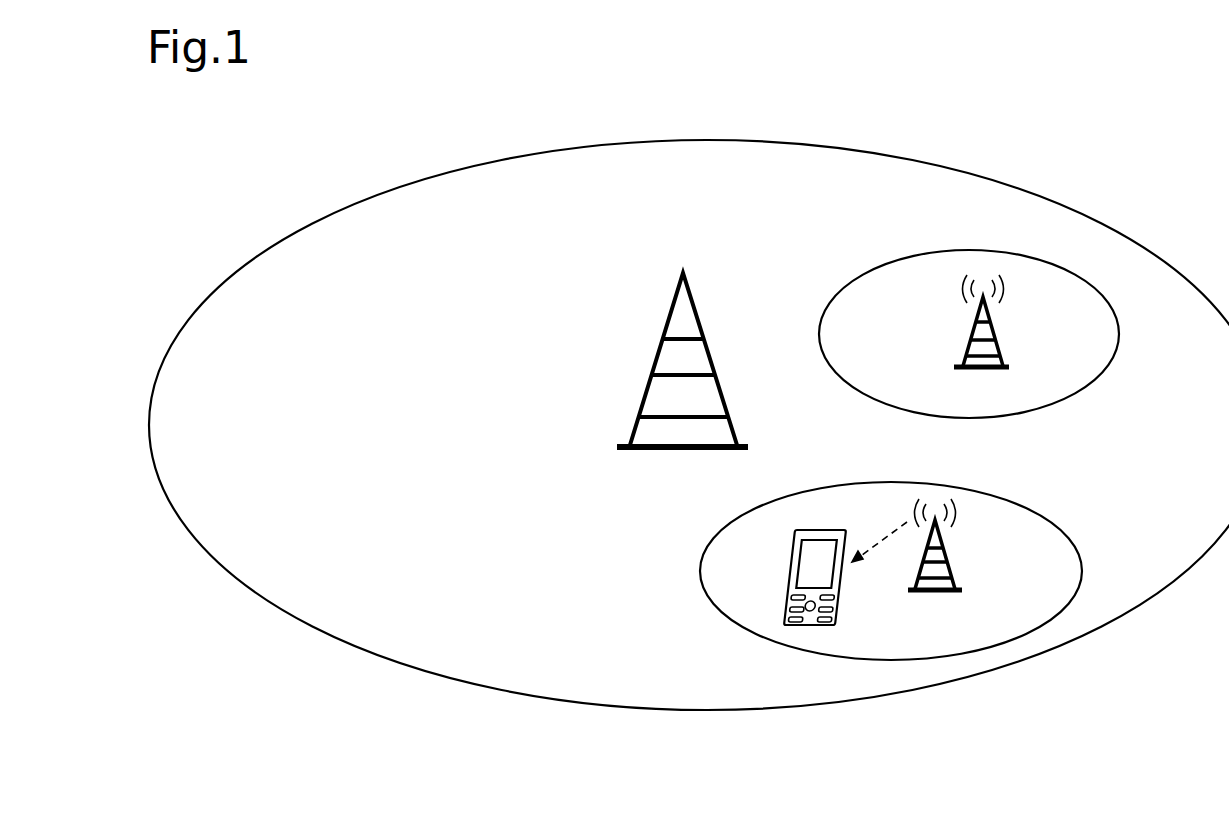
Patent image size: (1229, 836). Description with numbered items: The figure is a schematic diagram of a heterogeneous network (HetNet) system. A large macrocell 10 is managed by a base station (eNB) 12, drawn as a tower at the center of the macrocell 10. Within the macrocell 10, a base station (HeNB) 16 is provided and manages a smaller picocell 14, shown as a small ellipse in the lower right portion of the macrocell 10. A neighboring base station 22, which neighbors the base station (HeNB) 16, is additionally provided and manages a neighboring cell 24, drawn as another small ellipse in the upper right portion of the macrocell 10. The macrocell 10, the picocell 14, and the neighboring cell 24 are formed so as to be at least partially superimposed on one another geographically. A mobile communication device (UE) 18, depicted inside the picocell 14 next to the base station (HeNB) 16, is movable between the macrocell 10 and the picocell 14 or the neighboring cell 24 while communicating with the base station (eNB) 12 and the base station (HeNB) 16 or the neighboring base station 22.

The macrocell 10 is at (498, 653).
The base station (eNB) 12 is at (643, 380).
The picocell 14 is at (717, 583).
The base station (HeNB) 16 is at (957, 558).
The mobile communication device (UE) 18 is at (838, 600).
The neighboring base station 22 is at (1005, 337).
The neighboring cell 24 is at (908, 270).